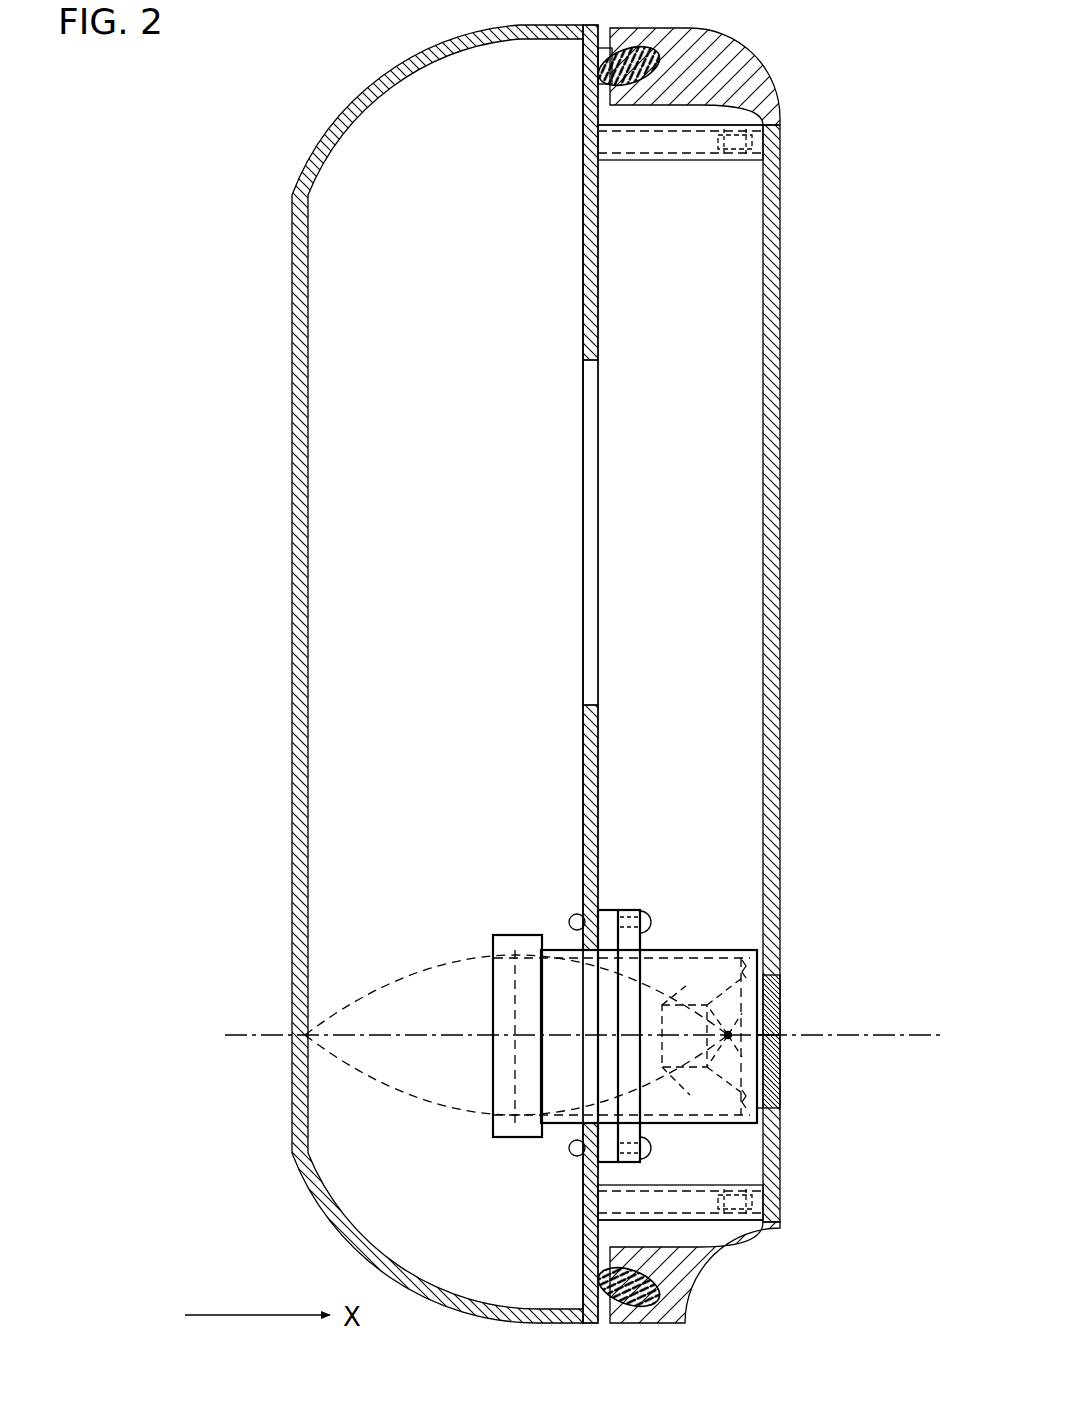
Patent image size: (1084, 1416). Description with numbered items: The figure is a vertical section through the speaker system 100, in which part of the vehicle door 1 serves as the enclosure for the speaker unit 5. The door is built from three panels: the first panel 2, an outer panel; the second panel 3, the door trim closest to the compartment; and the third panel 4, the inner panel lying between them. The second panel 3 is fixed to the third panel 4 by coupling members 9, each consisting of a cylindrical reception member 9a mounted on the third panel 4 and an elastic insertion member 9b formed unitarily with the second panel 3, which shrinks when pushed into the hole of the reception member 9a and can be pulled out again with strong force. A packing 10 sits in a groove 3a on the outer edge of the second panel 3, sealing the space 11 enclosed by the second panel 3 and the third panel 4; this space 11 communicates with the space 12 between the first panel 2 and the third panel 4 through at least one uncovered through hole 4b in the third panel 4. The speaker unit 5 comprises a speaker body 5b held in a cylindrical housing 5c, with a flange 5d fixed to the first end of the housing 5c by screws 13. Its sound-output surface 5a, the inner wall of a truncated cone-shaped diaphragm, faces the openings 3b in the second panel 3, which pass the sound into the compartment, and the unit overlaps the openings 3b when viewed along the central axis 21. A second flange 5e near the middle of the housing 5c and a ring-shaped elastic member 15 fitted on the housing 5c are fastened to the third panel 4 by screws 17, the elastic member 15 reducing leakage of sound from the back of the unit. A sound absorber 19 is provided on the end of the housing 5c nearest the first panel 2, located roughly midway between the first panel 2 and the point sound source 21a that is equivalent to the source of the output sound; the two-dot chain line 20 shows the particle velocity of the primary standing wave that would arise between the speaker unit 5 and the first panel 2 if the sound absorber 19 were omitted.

The speaker system 100 is at (834, 90).
The vehicle door 1 is at (306, 122).
The first panel 2 is at (292, 454).
The second panel 3 is at (781, 452).
The groove 3a is at (655, 68).
The openings 3b is at (777, 995).
The third panel 4 is at (583, 293).
The through holes 4b is at (590, 494).
The speaker unit 5 is at (555, 1078).
The sound-output surface 5a is at (720, 1124).
The speaker body 5b is at (684, 1005).
The housing 5c is at (547, 1052).
The flange 5d is at (755, 950).
The flange 5e is at (642, 910).
The coupling members 9 is at (678, 148).
The reception member 9a is at (638, 157).
The insertion member 9b is at (736, 156).
The packing 10 is at (584, 80).
The space 11 is at (688, 412).
The space 12 is at (437, 397).
The screws 13 is at (785, 1115).
The elastic member 15 is at (608, 910).
The screws 17 is at (575, 920).
The sound absorber 19 is at (498, 948).
The two-dot chain line 20 is at (367, 993).
The central axis 21 is at (864, 1033).
The point sound source 21a is at (778, 1068).